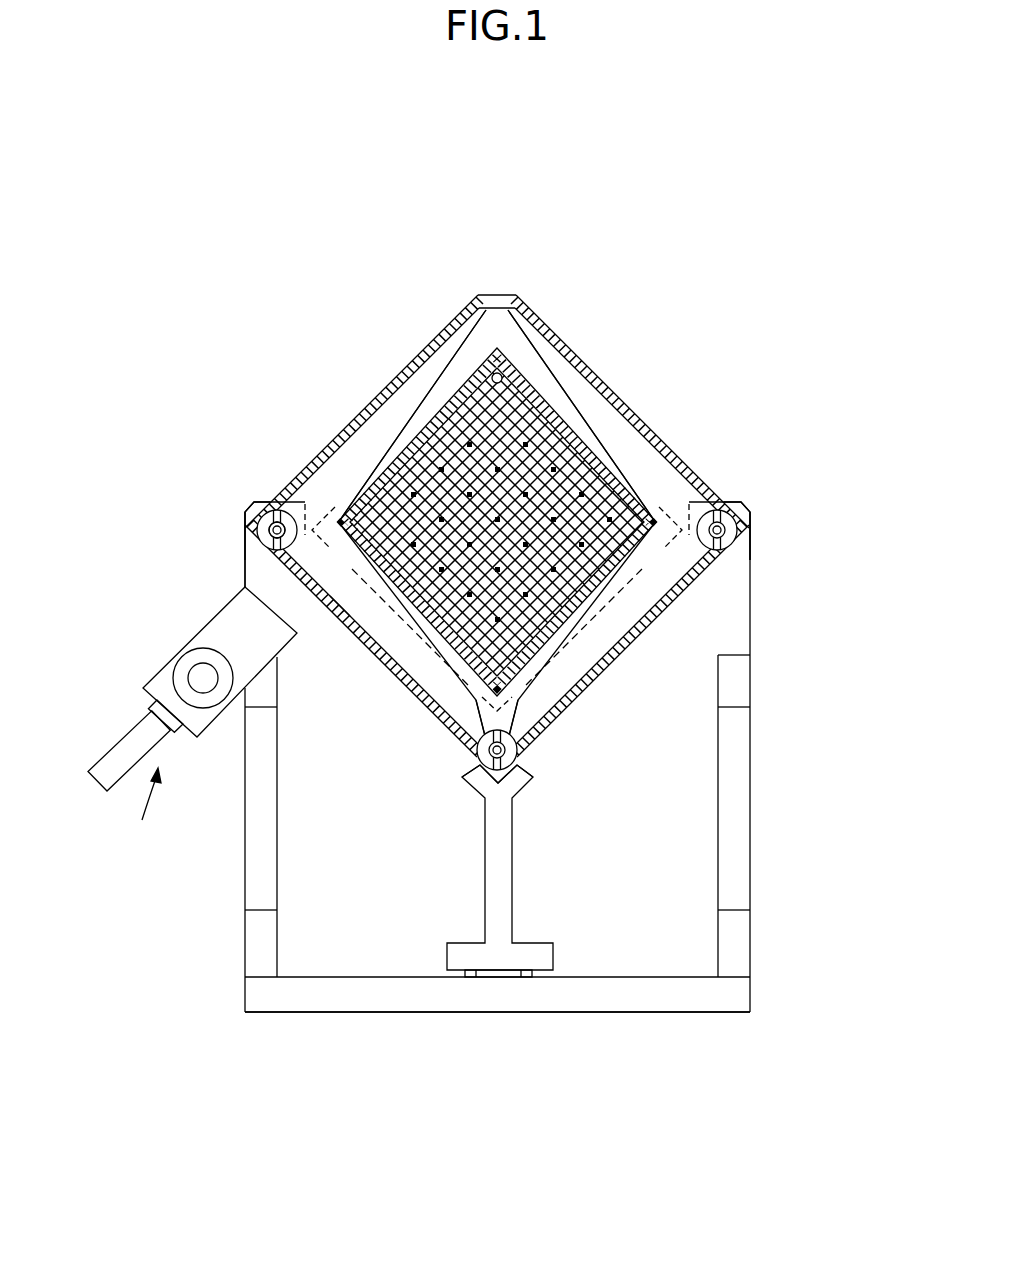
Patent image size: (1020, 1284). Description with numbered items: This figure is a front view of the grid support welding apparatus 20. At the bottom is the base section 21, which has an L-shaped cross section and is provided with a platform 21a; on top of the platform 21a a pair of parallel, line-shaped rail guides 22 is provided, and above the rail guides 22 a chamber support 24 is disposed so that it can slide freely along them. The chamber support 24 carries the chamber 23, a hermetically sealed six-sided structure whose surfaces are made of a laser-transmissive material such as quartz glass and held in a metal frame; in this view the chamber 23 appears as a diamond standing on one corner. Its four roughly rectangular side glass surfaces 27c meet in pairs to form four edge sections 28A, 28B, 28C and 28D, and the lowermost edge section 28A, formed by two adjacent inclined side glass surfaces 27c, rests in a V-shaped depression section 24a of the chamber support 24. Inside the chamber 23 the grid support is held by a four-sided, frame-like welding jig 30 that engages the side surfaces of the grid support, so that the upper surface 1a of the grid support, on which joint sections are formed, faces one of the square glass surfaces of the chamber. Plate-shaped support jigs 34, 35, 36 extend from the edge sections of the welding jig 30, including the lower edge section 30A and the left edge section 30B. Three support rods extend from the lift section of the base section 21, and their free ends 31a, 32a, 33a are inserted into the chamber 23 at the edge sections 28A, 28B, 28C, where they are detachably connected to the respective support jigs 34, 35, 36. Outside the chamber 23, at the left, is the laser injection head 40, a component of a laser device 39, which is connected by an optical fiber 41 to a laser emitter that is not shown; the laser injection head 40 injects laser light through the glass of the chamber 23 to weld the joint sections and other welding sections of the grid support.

The upper surface 1a is at (628, 588).
The grid support welding apparatus 20 is at (216, 300).
The base section 21 is at (352, 1025).
The platform 21a is at (572, 1013).
The rail guides 22 is at (527, 980).
The chamber 23 is at (478, 292).
The chamber support 24 is at (245, 853).
The V-shaped depression section 24a is at (343, 612).
The side glass surfaces 27c is at (367, 400).
The lowermost edge section 28A is at (500, 786).
The edge section 28B is at (244, 524).
The edge section 28C is at (750, 506).
The edge section 28D is at (497, 294).
The welding jig 30 is at (443, 398).
The edge section of welding jig 30A is at (522, 703).
The edge section of welding jig 30B is at (333, 497).
The free end of support rod 31a is at (478, 786).
The free end of support rod 32a is at (245, 540).
The free end of support rod 33a is at (750, 525).
The support jig 34 is at (525, 755).
The support jig 35 is at (285, 553).
The support jig 36 is at (722, 493).
The laser device 39 is at (135, 822).
The laser injection head 40 is at (190, 643).
The optical fiber 41 is at (132, 733).